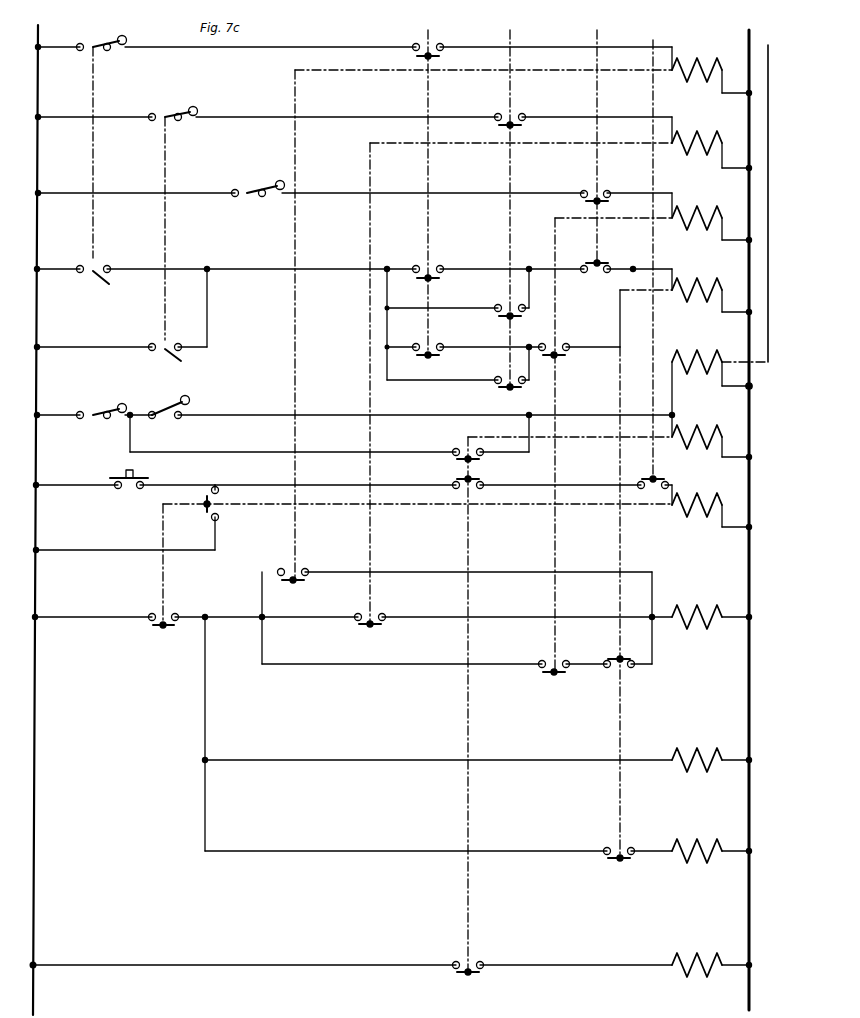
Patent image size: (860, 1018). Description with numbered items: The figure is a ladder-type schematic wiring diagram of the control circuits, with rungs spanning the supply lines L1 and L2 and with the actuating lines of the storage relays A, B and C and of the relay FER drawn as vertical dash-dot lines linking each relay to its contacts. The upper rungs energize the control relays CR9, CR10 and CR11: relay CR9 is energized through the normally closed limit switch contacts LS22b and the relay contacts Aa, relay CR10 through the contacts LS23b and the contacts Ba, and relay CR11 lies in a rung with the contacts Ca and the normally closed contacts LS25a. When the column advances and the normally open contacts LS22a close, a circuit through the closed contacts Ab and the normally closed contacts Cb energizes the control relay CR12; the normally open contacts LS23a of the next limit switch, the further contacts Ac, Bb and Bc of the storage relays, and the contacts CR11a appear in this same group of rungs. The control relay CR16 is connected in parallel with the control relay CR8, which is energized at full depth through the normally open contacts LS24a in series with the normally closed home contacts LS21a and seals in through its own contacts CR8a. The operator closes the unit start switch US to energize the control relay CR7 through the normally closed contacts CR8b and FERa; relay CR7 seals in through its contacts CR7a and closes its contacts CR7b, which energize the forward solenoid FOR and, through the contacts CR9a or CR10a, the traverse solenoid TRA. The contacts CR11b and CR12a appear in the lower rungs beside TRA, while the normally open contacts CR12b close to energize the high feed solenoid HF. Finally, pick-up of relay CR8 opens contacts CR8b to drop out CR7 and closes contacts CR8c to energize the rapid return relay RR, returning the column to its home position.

The supply line L1 is at (35, 511).
The supply line L2 is at (746, 509).
The storage apparatus relay A is at (426, 184).
The storage apparatus relay B is at (508, 201).
The storage apparatus relay C is at (595, 138).
The relay FER is at (649, 241).
The normally closed contacts LS22b is at (95, 42).
The normally closed contacts LS23b is at (178, 102).
The normally closed contacts LS25a is at (250, 198).
The normally open contacts LS22a is at (113, 276).
The normally open contacts LS23a is at (195, 357).
The normally closed contacts LS21a is at (96, 408).
The normally open contacts LS24a is at (192, 406).
The unit start switch US is at (118, 500).
The relay contacts Aa is at (445, 55).
The relay contacts Ba is at (517, 125).
The relay contacts Ca is at (590, 203).
The relay contacts Ab is at (437, 262).
The relay contacts Bb is at (502, 303).
The relay contacts Ac is at (435, 344).
The relay contacts Bc is at (502, 390).
The normally closed contacts Cb is at (594, 275).
The relay contacts CR11a is at (560, 356).
The normally closed contacts FERa is at (656, 476).
The contacts CR8a is at (460, 448).
The normally closed contacts CR8b is at (458, 480).
The contacts CR8c is at (462, 974).
The normally open contacts CR7a is at (226, 512).
The contacts CR7b is at (158, 630).
The contacts CR9a is at (296, 564).
The contacts CR10a is at (374, 626).
The contacts CR11b is at (560, 674).
The contacts CR12a is at (624, 672).
The normally open contacts CR12b is at (625, 864).
The control relay CR9 is at (522, 309).
The control relay CR10 is at (559, 366).
The control relay CR11 is at (652, 212).
The control relay CR12 is at (684, 286).
The control relay CR16 is at (730, 231).
The control relay CR8 is at (608, 689).
The control relay CR7 is at (456, 550).
The traverse solenoid TRA is at (710, 609).
The forward solenoid FOR is at (710, 751).
The high feed solenoid HF is at (710, 842).
The rapid return relay RR is at (710, 956).